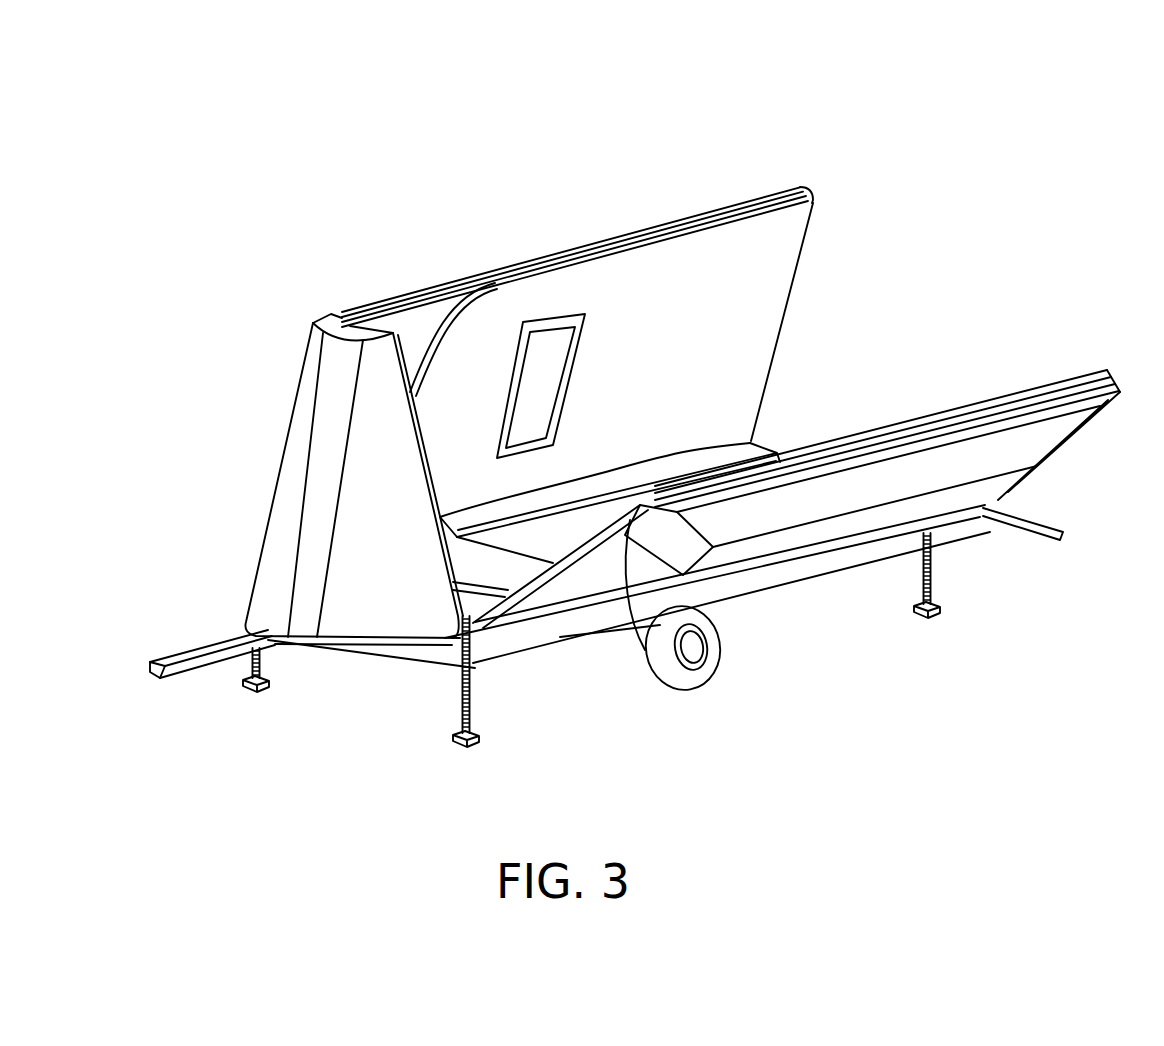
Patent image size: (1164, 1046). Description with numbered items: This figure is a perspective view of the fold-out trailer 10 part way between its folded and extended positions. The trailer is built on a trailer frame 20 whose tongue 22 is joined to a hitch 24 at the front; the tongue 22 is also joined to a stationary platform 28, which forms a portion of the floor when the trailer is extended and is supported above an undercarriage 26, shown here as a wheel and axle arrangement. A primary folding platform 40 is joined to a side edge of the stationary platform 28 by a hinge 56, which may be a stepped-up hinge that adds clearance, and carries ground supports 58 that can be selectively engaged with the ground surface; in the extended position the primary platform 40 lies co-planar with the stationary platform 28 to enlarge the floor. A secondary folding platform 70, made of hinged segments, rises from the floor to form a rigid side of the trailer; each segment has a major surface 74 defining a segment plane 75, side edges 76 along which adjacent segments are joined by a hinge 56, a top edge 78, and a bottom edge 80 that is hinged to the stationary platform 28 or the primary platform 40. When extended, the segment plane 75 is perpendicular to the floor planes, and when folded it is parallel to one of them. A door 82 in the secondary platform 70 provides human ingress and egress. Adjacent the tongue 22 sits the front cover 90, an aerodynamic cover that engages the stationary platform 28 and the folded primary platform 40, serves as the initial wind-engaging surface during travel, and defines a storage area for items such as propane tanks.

The fold-out trailer 10 is at (449, 152).
The trailer frame 20 is at (362, 731).
The tongue 22 is at (207, 663).
The hitch 24 is at (160, 680).
The undercarriage 26 is at (737, 655).
The stationary platform 28 is at (512, 660).
The primary folding platform 40 is at (777, 193).
The hinge 56 is at (717, 447).
The ground supports 58 is at (258, 658).
The secondary folding platform 70 is at (752, 312).
The major surface 74 is at (626, 360).
The segment plane 75 is at (744, 245).
The side edges 76 is at (700, 210).
The top edge 78 is at (433, 327).
The bottom edge 80 is at (347, 308).
The door 82 is at (603, 579).
The front cover 90 is at (287, 443).